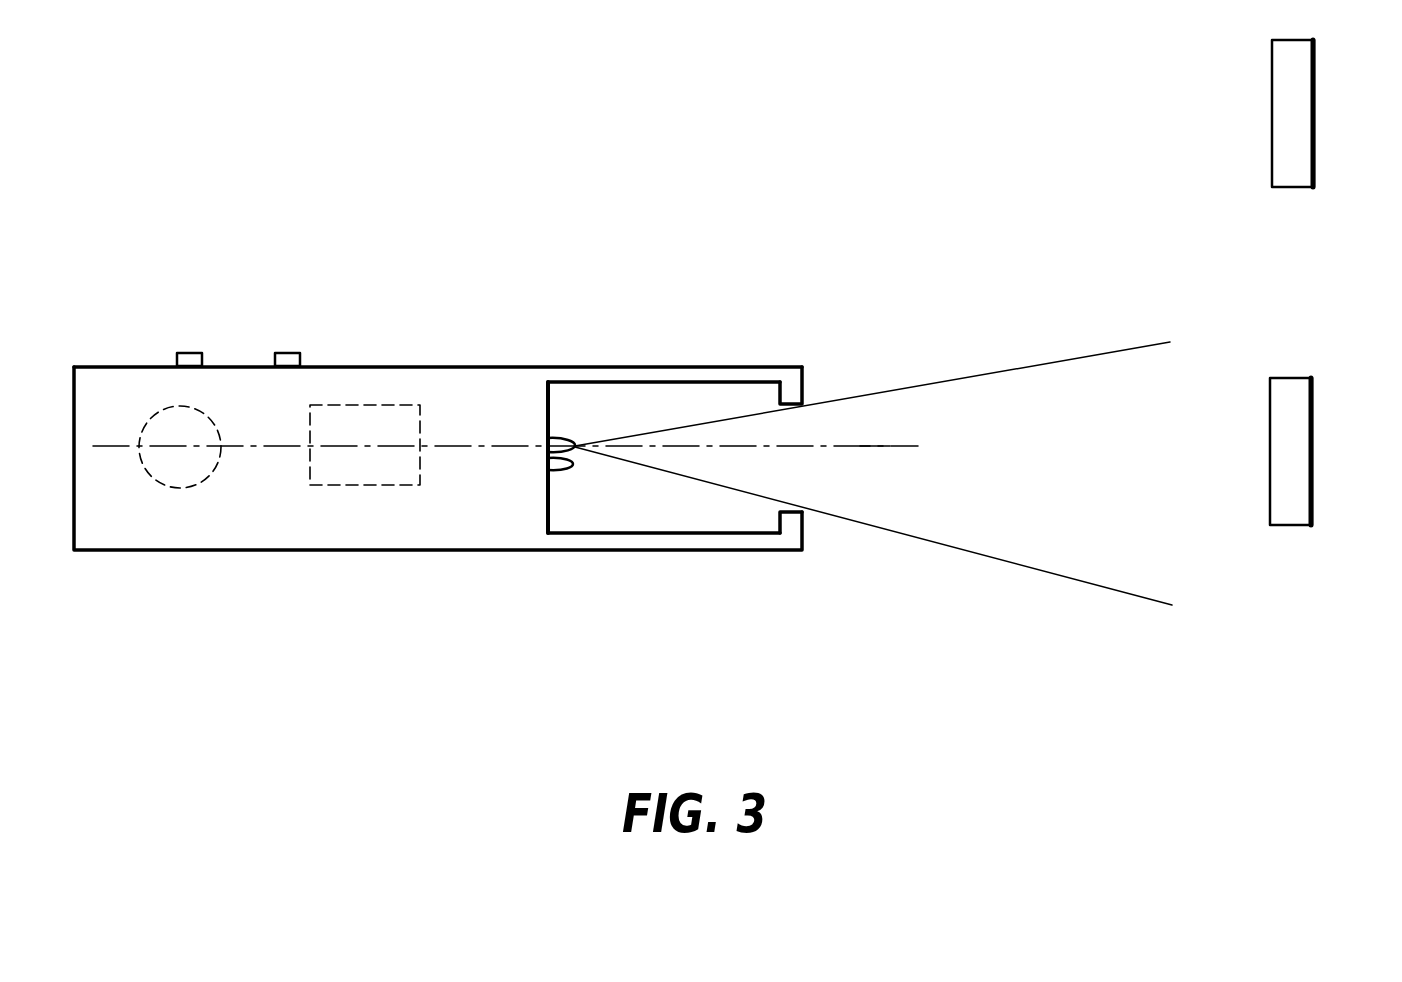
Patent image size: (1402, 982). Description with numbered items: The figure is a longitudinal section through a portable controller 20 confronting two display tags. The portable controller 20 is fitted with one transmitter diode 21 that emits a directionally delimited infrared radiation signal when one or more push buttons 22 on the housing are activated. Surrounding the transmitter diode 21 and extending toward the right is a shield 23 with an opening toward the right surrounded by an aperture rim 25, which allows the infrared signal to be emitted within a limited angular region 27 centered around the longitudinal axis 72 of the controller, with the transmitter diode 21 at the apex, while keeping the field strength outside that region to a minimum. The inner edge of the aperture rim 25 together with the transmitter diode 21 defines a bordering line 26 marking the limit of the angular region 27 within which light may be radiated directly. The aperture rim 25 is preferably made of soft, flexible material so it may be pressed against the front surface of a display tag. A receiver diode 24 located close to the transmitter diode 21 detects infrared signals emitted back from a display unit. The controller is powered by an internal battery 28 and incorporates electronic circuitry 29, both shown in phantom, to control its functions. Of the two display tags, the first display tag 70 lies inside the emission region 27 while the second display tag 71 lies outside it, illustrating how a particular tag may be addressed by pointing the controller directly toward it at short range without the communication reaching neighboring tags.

The portable controller 20 is at (480, 255).
The transmitter diode 21 is at (548, 440).
The push buttons 22 is at (288, 352).
The shield 23 is at (661, 366).
The receiver diode 24 is at (548, 466).
The aperture rim 25 is at (809, 378).
The bordering line 26 is at (1033, 365).
The angular region 27 is at (986, 459).
The internal battery 28 is at (172, 475).
The electronic circuitry 29 is at (363, 472).
The first display tag 70 is at (1314, 418).
The second display tag 71 is at (1316, 100).
The longitudinal axis 72 is at (878, 447).